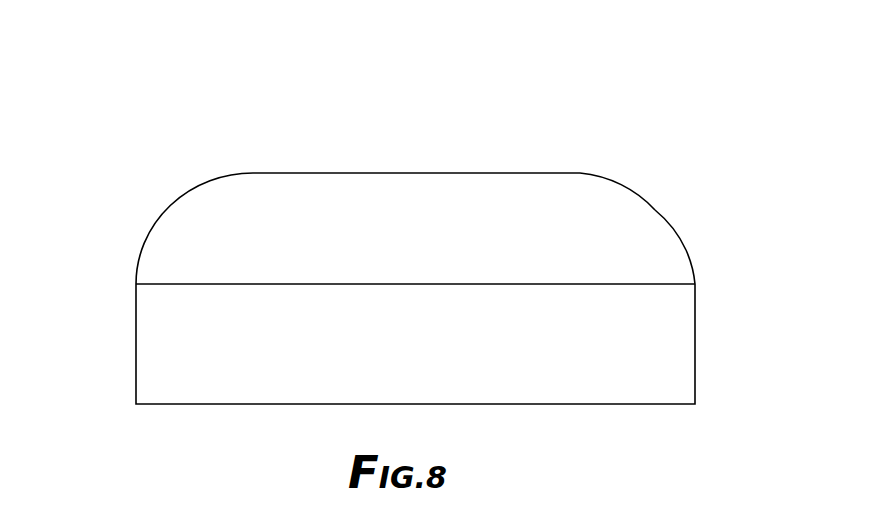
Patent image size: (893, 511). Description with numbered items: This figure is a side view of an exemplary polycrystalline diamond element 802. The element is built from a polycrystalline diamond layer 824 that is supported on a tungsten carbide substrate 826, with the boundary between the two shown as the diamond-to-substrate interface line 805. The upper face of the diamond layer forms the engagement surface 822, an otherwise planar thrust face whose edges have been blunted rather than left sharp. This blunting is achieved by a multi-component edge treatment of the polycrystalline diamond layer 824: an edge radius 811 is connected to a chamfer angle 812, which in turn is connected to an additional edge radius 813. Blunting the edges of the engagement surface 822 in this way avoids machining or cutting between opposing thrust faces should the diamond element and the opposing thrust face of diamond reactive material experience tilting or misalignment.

The polycrystalline diamond element 802 is at (419, 216).
The engagement surface 822 is at (416, 172).
The edge radius 811 is at (643, 177).
The chamfer angle 812 is at (674, 205).
The additional edge radius 813 is at (699, 255).
The polycrystalline diamond layer 824 is at (153, 231).
The diamond-to-substrate interface line 805 is at (129, 280).
The tungsten carbide substrate 826 is at (134, 332).